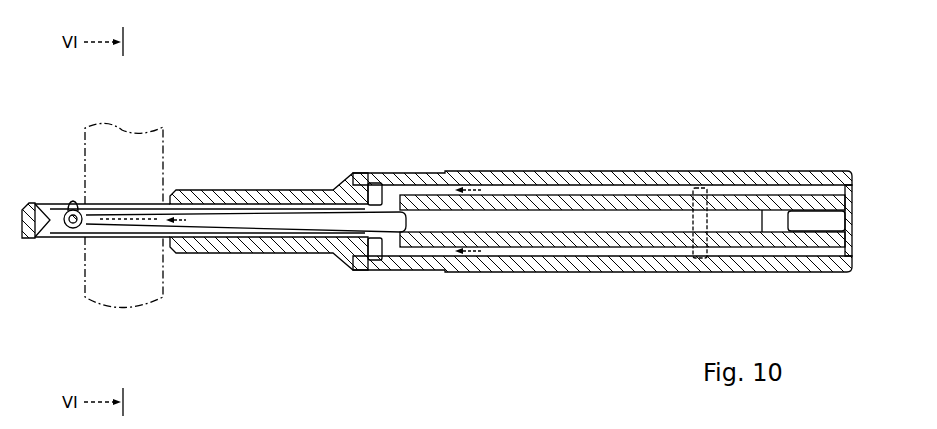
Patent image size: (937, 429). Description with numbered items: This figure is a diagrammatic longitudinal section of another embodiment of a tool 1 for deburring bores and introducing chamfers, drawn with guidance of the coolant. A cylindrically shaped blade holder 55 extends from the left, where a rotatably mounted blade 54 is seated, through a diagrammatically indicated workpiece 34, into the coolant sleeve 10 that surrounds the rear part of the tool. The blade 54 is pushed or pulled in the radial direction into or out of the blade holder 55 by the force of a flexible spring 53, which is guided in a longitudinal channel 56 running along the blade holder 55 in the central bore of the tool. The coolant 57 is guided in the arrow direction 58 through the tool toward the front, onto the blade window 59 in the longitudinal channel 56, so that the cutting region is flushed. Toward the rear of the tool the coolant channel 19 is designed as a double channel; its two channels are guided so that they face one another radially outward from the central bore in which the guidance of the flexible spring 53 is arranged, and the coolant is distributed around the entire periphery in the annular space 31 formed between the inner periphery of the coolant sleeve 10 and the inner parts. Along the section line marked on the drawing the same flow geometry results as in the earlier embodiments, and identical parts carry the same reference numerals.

The tool 1 is at (601, 170).
The coolant sleeve 10 is at (262, 186).
The coolant channel 19 is at (660, 180).
The annular space 31 is at (343, 268).
The workpiece 34 is at (130, 148).
The flexible spring 53 is at (308, 217).
The blade 54 is at (73, 200).
The blade holder 55 is at (35, 240).
The longitudinal channel 56 is at (163, 201).
The coolant 57 is at (483, 184).
The arrow direction 58 is at (192, 222).
The blade window 59 is at (55, 206).